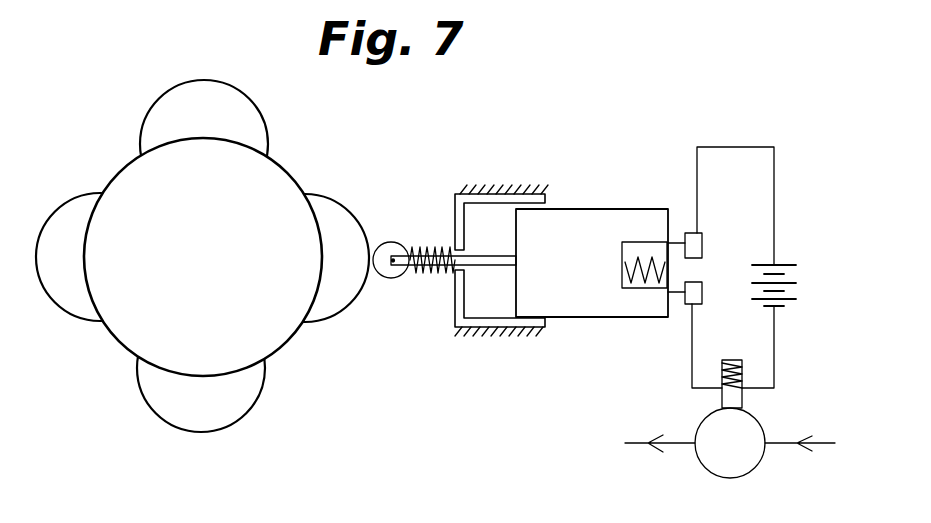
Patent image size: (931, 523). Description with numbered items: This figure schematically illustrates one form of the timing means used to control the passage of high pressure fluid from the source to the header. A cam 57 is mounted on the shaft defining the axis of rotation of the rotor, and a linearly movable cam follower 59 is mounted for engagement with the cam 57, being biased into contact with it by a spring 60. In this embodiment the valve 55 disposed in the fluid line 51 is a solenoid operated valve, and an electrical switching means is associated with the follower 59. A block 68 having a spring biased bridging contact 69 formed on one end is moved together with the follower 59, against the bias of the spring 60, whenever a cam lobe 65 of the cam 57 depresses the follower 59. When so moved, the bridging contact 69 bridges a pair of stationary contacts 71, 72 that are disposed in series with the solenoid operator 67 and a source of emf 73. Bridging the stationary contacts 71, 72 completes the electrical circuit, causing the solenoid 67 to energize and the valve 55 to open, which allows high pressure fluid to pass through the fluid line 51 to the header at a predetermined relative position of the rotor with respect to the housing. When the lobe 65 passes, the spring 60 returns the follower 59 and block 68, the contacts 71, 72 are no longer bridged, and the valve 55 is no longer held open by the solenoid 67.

The fluid line 51 is at (633, 444).
The valve 55 is at (717, 468).
The cam 57 is at (265, 172).
The cam follower 59 is at (383, 246).
The spring 60 is at (424, 276).
The cam lobe 65 is at (72, 210).
The solenoid operator 67 is at (752, 404).
The block 68 is at (578, 222).
The bridging contact 69 is at (675, 287).
The stationary contact 71 is at (706, 232).
The stationary contact 72 is at (702, 294).
The source of emf 73 is at (788, 287).